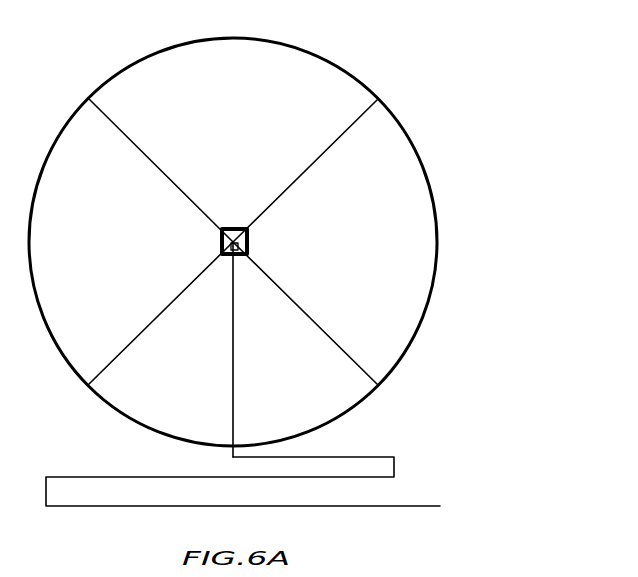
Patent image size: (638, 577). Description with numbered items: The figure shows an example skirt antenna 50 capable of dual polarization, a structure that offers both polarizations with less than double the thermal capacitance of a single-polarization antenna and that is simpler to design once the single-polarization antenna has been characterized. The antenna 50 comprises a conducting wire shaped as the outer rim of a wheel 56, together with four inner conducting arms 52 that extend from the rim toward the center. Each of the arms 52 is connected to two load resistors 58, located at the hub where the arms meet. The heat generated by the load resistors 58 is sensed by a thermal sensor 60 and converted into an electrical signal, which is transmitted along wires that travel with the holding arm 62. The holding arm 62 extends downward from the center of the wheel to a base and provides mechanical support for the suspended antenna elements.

The skirt antenna 50 is at (493, 77).
The inner conducting arms 52 is at (322, 158).
The outer rim of a wheel 56 is at (338, 62).
The load resistors 58 is at (240, 228).
The thermal sensor 60 is at (222, 238).
The holding arm 62 is at (235, 315).